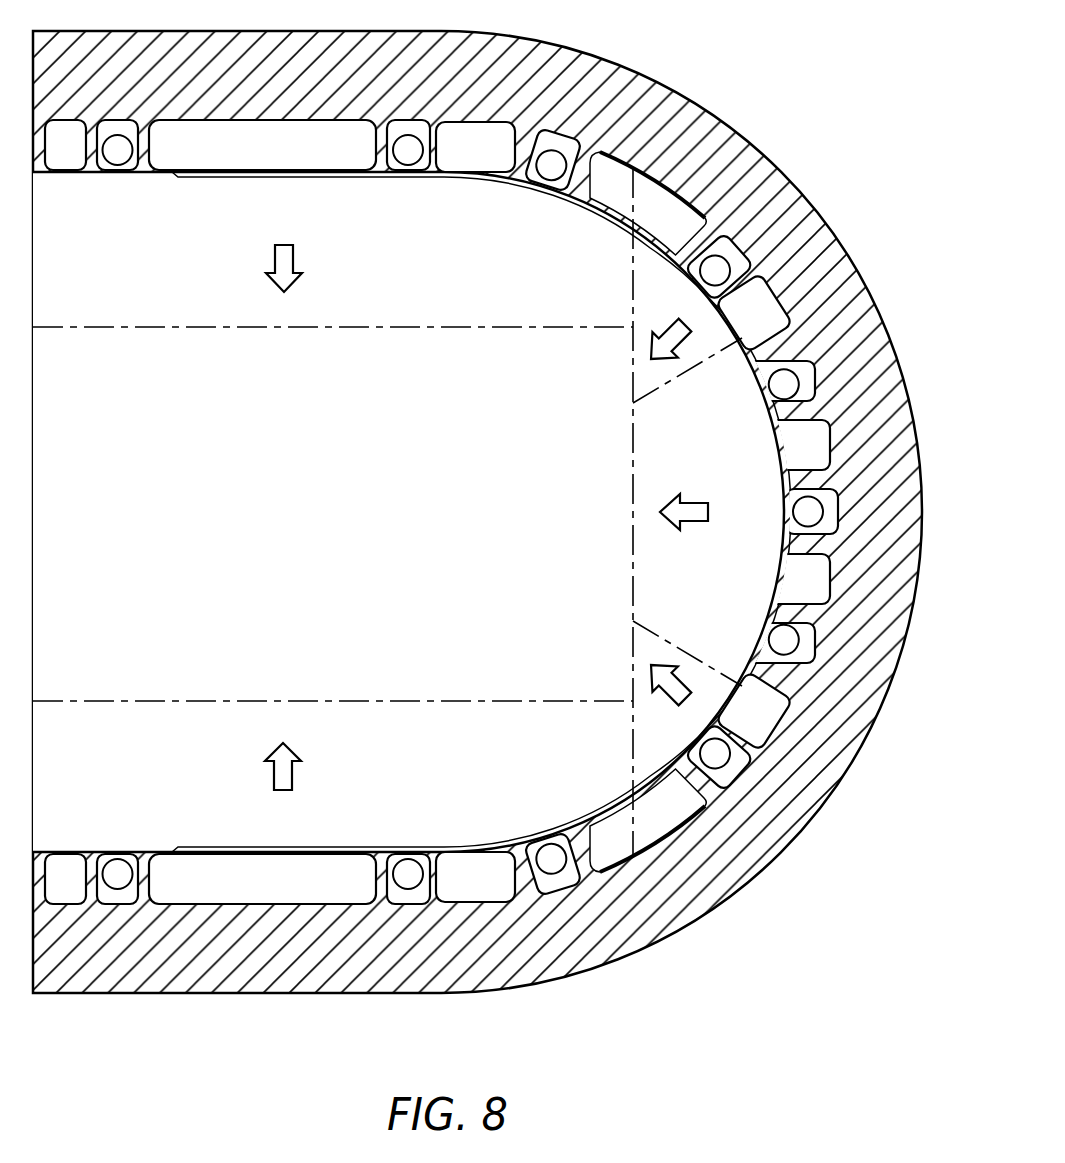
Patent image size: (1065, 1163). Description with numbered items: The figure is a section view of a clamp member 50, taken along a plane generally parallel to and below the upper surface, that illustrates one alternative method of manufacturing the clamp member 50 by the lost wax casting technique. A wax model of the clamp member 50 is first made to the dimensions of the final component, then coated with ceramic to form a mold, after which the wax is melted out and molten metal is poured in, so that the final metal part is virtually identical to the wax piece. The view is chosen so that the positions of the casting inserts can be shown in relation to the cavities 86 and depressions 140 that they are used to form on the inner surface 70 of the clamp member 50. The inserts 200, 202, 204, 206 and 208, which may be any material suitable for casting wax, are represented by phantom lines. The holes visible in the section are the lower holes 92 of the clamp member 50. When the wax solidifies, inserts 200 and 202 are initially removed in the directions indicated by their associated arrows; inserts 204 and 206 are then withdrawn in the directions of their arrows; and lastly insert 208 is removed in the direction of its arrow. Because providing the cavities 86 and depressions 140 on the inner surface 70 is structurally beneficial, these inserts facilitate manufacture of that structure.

The clamp member 50 is at (643, 80).
The inner surface 70 is at (663, 255).
The cavity 86 is at (397, 168).
The lower hole 92 is at (408, 158).
The depression 140 is at (470, 165).
The insert 200 is at (117, 315).
The insert 202 is at (180, 707).
The insert 204 is at (633, 388).
The insert 206 is at (633, 645).
The insert 208 is at (640, 540).